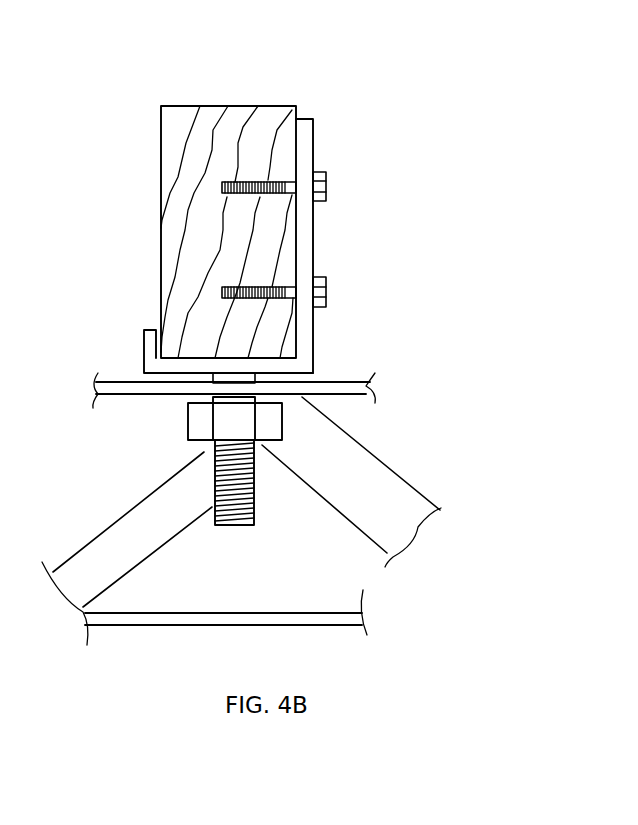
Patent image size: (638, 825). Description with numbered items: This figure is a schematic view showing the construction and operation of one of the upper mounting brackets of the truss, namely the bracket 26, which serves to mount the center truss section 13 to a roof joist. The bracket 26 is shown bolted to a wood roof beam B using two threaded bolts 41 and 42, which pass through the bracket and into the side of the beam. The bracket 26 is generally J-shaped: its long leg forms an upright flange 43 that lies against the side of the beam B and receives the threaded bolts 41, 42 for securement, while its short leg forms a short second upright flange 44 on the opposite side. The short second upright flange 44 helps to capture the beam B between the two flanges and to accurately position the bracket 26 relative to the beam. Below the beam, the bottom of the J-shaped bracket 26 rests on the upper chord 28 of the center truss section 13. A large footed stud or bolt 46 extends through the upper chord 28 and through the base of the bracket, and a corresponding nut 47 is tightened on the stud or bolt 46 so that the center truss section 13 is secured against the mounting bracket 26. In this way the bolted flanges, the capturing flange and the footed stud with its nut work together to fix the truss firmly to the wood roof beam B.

The wood roof beam B is at (197, 238).
The center truss section 13 is at (457, 482).
The upper mounting bracket 26 is at (341, 238).
The upper chord 28 is at (343, 388).
The threaded bolt 41 is at (327, 183).
The threaded bolt 42 is at (327, 288).
The upright flange 43 is at (307, 330).
The short second upright flange 44 is at (150, 350).
The footed stud or bolt 46 is at (240, 502).
The nut 47 is at (200, 425).